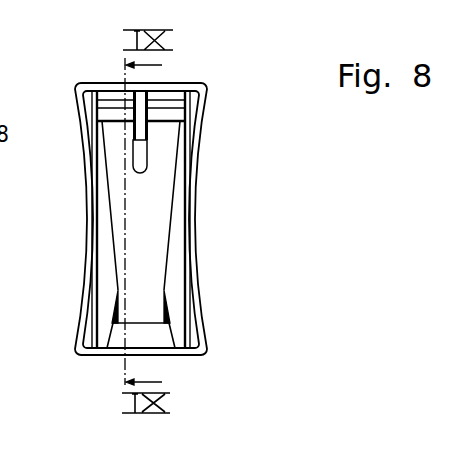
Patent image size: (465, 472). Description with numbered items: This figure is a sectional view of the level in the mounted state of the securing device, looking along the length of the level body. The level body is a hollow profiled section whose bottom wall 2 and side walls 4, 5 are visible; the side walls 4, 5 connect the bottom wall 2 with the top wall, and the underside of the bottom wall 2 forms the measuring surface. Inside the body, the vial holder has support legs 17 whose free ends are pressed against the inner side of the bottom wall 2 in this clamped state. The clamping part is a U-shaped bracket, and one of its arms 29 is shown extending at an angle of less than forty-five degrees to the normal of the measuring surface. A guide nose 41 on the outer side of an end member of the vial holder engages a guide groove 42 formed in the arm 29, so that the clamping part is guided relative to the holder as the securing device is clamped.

The bottom wall 2 is at (180, 352).
The side wall 4 is at (93, 220).
The side wall 5 is at (192, 215).
The support leg 17 is at (100, 328).
The arm 29 is at (160, 182).
The guide nose 41 is at (137, 116).
The guide groove 42 is at (143, 157).